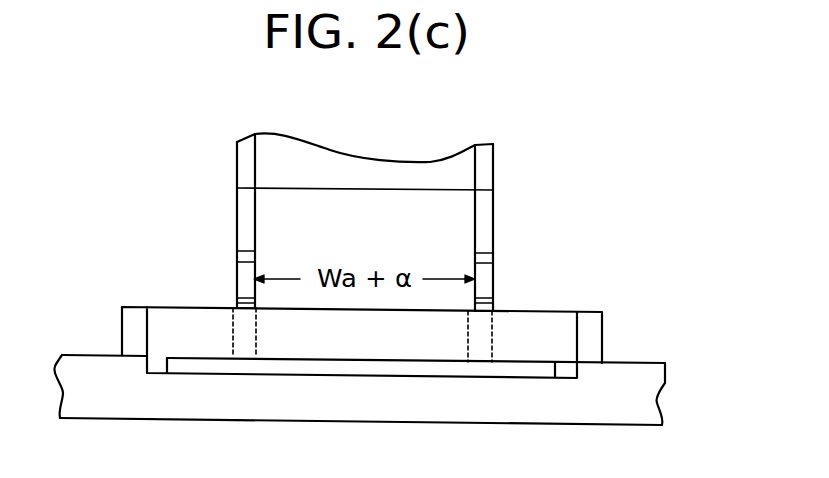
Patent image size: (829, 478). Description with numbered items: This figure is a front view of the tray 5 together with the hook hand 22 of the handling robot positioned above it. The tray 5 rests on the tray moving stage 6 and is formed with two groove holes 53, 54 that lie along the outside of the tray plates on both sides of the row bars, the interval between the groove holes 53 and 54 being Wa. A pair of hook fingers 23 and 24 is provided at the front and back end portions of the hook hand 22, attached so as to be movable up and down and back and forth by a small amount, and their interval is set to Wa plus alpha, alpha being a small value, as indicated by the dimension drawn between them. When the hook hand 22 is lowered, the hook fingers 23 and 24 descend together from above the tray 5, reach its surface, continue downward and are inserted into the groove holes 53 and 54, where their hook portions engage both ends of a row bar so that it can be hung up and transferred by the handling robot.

The hook hand 22 is at (433, 170).
The hook finger 23 is at (242, 200).
The hook finger 24 is at (483, 207).
The tray 5 is at (422, 340).
The tray moving stage 6 is at (533, 397).
The groove hole 53 is at (242, 330).
The groove hole 54 is at (492, 333).